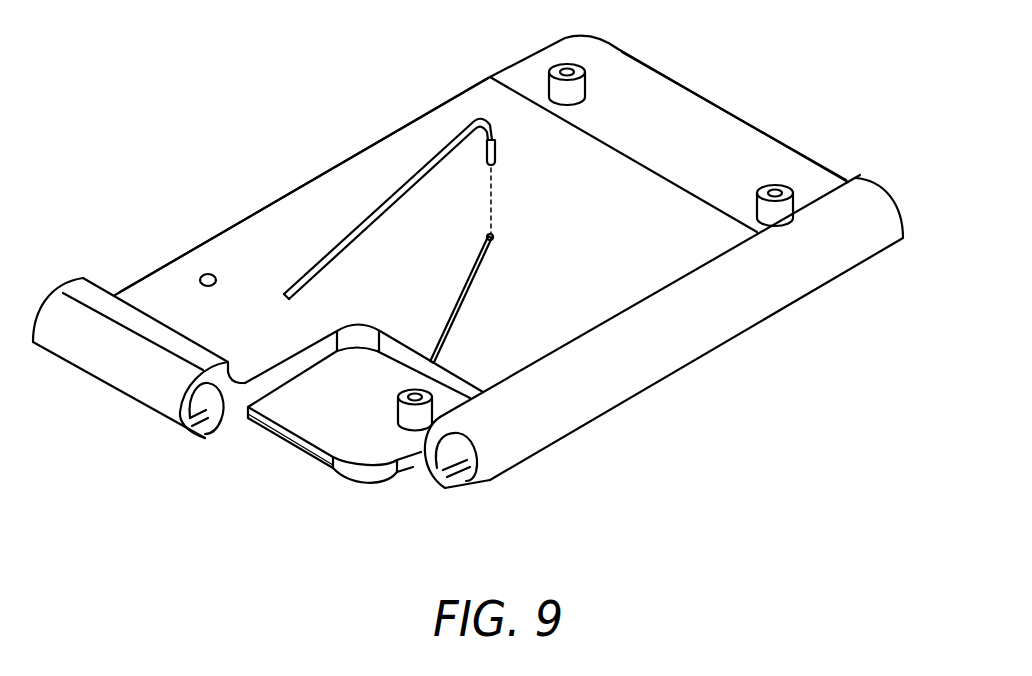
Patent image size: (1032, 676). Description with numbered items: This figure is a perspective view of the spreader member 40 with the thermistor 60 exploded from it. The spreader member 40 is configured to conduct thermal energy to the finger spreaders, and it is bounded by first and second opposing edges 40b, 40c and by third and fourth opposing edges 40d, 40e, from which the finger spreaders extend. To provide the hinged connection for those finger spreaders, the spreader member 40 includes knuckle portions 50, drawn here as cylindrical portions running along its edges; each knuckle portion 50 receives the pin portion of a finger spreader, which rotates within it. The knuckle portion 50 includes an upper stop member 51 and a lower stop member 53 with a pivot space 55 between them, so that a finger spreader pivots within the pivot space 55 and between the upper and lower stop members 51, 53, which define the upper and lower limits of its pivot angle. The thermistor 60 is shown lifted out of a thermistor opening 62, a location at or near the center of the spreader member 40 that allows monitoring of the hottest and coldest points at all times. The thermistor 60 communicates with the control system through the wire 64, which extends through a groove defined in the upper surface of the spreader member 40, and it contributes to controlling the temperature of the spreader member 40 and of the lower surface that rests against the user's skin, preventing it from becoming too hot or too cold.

The spreader member 40 is at (648, 200).
The first edge 40b is at (840, 277).
The second edge 40c is at (267, 205).
The third edge 40d is at (147, 410).
The fourth edge 40e is at (727, 107).
The knuckle portion 50 is at (100, 350).
The upper stop member 51 is at (475, 485).
The lower stop member 53 is at (460, 483).
The pivot space 55 is at (193, 450).
The thermistor 60 is at (498, 150).
The thermistor opening 62 is at (498, 238).
The wire 64 is at (373, 216).